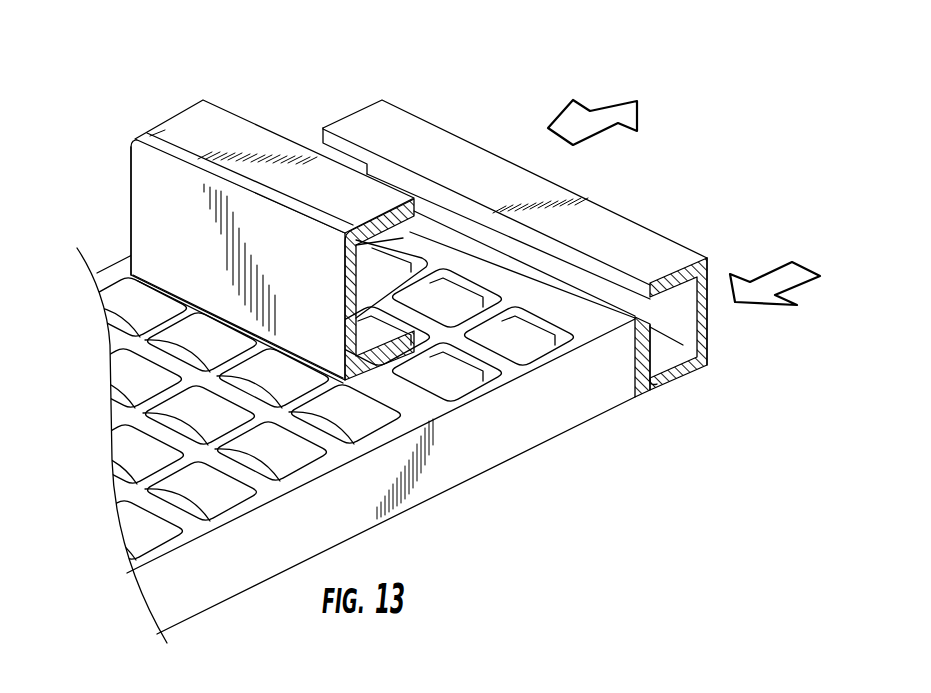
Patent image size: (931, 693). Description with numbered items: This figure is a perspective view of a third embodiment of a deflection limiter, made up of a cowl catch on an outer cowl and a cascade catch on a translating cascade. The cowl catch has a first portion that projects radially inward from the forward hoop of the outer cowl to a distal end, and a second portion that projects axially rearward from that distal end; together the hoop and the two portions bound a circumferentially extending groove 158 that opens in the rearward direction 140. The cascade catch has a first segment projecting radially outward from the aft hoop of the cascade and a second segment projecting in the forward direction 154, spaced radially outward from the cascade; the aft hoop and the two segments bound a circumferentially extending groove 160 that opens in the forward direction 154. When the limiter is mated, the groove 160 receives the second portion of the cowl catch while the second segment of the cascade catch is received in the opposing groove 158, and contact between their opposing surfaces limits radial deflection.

The rearward direction 140 is at (603, 108).
The forward direction 154 is at (775, 277).
The groove 158 is at (403, 238).
The groove 160 is at (678, 320).